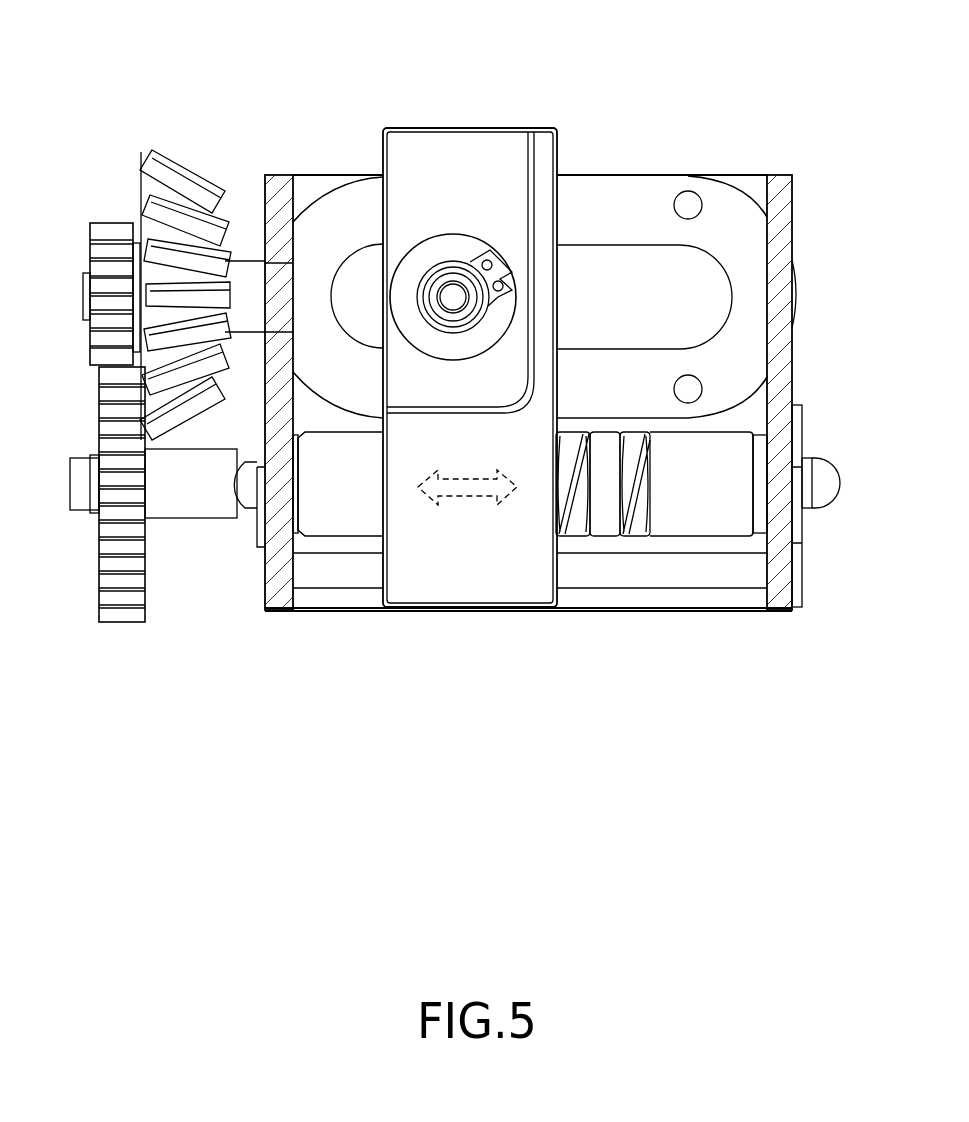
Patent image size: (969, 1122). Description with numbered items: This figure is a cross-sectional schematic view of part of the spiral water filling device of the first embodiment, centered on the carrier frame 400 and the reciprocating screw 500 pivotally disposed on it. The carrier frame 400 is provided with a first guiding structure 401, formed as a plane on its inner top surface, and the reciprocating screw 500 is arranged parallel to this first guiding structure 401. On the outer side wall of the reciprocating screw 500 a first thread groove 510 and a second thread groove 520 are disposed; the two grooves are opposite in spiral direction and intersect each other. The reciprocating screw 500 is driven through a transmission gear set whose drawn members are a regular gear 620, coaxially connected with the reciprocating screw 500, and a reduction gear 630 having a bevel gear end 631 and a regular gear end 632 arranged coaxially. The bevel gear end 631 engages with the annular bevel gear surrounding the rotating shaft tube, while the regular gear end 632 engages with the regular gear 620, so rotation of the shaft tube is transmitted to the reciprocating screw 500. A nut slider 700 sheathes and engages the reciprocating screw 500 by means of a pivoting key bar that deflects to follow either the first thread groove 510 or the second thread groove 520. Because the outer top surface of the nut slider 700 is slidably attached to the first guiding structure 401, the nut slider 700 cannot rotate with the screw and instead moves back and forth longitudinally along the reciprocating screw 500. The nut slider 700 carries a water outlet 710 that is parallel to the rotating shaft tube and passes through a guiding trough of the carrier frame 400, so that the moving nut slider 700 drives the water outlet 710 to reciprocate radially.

The carrier frame 400 is at (785, 175).
The first guiding structure 401 is at (626, 280).
The reciprocating screw 500 is at (688, 540).
The first thread groove 510 is at (648, 532).
The second thread groove 520 is at (618, 533).
The regular gear 620 is at (130, 598).
The reduction gear 630 is at (143, 238).
The bevel gear end 631 is at (190, 266).
The regular gear end 632 is at (110, 235).
The nut slider 700 is at (512, 125).
The water outlet 710 is at (448, 277).